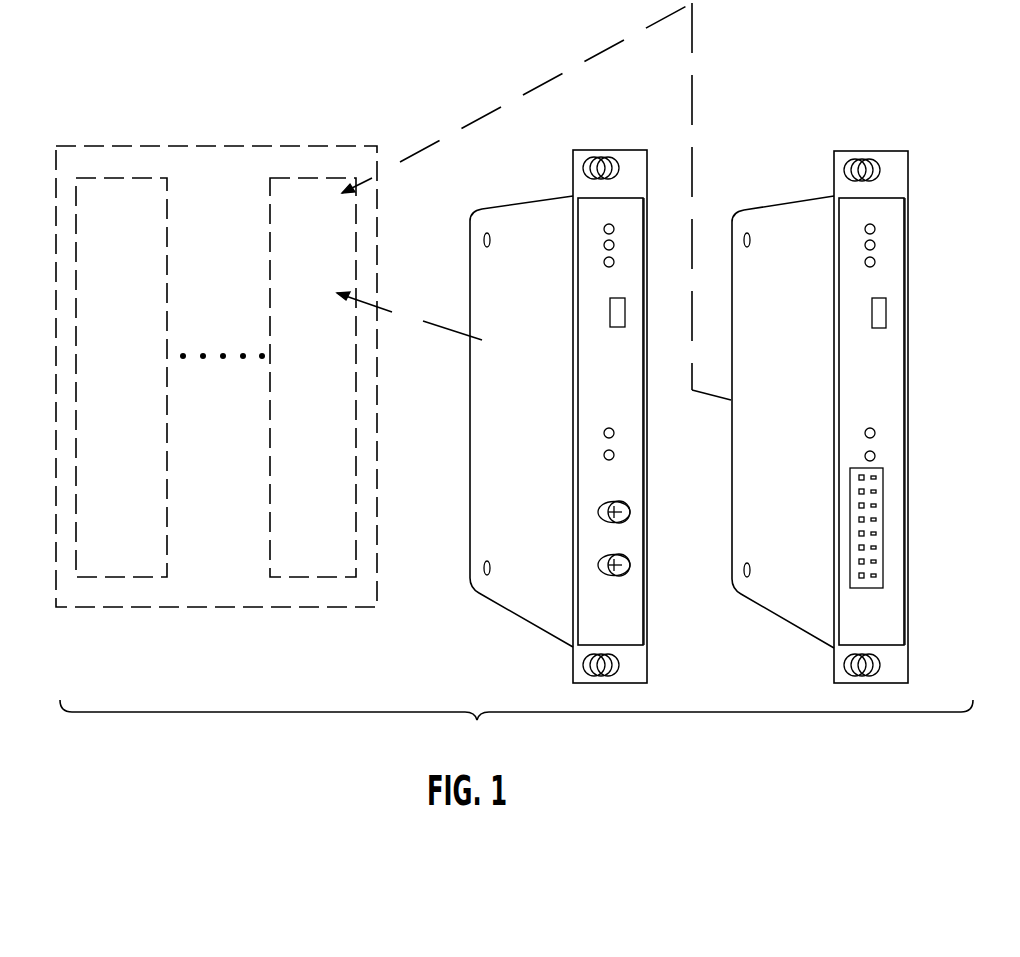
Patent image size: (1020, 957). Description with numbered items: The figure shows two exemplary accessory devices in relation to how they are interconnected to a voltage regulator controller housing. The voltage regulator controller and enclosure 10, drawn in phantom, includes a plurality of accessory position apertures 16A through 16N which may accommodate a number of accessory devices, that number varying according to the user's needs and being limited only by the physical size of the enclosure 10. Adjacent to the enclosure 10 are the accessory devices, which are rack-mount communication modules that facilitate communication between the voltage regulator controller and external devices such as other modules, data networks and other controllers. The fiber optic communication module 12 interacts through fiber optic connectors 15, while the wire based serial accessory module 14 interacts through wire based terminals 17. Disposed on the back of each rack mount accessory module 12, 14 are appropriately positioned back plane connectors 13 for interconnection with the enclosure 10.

The voltage regulator controller and enclosure 10 is at (196, 126).
The fiber optic communication module 12 is at (633, 150).
The back plane connectors 13 is at (470, 430).
The wire based RS/232 accessory module 14 is at (890, 151).
The fiber optic connectors 15 is at (628, 558).
The accessory position aperture 16A is at (357, 228).
The accessory position aperture 16N is at (107, 177).
The wire based terminals 17 is at (850, 558).